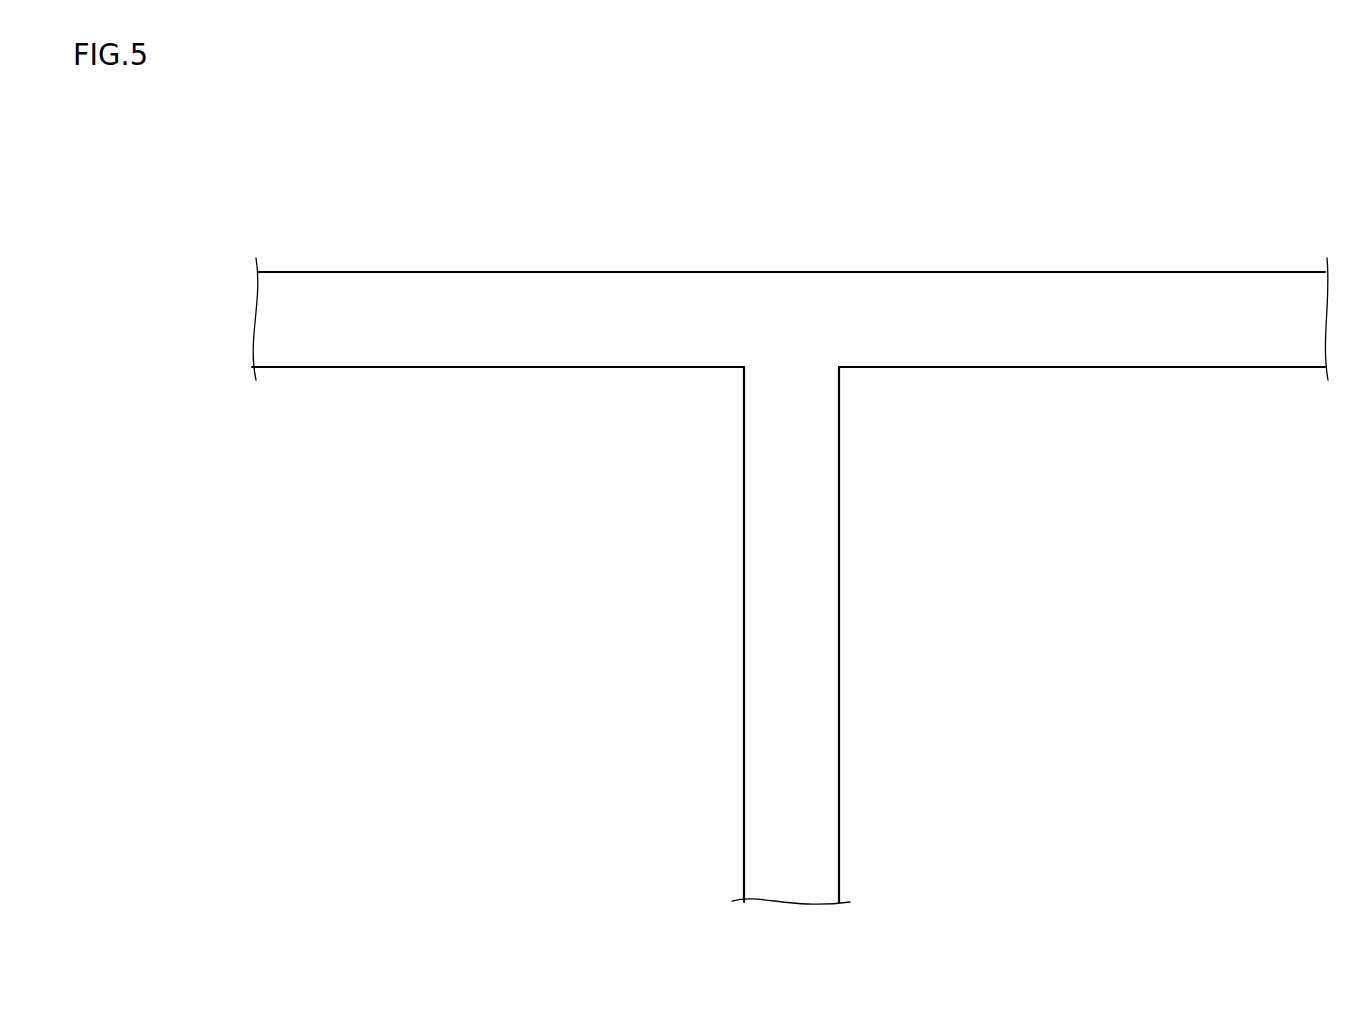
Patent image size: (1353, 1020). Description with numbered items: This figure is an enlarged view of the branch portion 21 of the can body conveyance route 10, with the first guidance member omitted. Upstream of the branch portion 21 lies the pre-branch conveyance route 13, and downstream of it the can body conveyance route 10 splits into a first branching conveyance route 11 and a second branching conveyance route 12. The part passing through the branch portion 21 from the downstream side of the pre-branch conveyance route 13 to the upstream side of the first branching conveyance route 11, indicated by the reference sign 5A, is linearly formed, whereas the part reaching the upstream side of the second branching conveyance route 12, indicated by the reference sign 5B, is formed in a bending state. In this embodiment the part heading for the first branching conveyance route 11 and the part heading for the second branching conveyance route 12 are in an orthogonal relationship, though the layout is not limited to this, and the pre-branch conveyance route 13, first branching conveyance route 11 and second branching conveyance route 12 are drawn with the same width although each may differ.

The can body conveyance route 10 is at (1075, 165).
The first branching conveyance route 11 is at (1031, 266).
The second branching conveyance route 12 is at (853, 717).
The pre-branch conveyance route 13 is at (252, 207).
The branch portion 21 is at (927, 465).
The part reaching the first branching conveyance route 5A is at (252, 395).
The part reaching the second branching conveyance route 5B is at (252, 432).